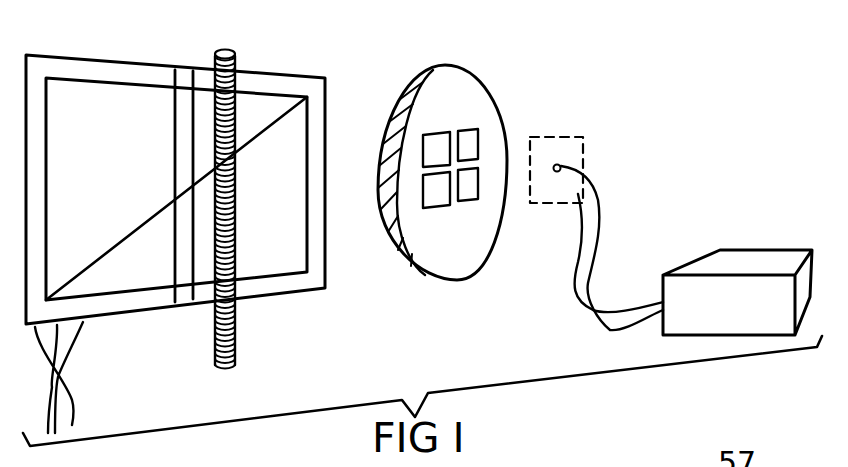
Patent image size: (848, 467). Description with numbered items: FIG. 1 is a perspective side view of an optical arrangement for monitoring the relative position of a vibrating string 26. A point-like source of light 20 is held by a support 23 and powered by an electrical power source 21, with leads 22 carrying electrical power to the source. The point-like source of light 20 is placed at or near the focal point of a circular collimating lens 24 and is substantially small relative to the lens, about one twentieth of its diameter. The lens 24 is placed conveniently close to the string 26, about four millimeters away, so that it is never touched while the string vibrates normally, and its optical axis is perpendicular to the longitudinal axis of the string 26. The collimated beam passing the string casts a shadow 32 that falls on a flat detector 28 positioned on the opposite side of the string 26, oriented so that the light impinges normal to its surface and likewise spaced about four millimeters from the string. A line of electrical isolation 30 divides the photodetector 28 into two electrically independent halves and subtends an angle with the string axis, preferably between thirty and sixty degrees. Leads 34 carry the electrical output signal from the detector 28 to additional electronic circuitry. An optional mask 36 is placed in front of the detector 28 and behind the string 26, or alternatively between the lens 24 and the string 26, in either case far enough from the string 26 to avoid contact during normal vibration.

The point-like source of light 20 is at (556, 173).
The electrical power source 21 is at (740, 262).
The leads 22 is at (575, 302).
The support 23 is at (560, 135).
The lens 24 is at (478, 107).
The string 26 is at (233, 100).
The flat detector 28 is at (90, 97).
The line of electrical isolation 30 is at (122, 248).
The shadow 32 is at (185, 103).
The leads 34 is at (70, 350).
The mask 36 is at (320, 130).